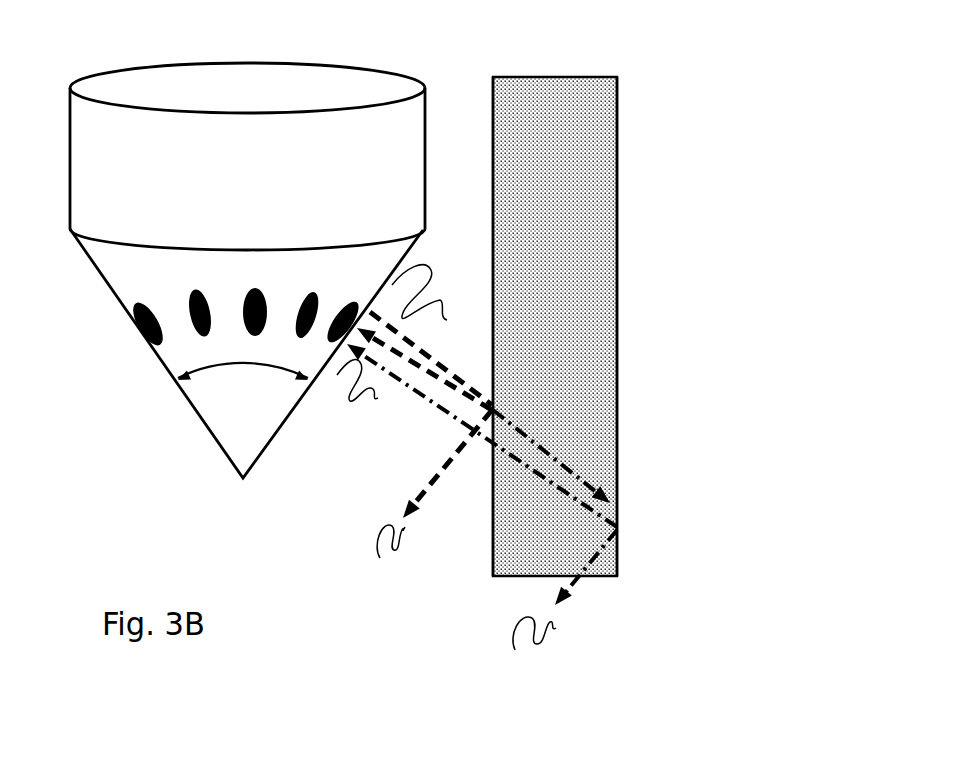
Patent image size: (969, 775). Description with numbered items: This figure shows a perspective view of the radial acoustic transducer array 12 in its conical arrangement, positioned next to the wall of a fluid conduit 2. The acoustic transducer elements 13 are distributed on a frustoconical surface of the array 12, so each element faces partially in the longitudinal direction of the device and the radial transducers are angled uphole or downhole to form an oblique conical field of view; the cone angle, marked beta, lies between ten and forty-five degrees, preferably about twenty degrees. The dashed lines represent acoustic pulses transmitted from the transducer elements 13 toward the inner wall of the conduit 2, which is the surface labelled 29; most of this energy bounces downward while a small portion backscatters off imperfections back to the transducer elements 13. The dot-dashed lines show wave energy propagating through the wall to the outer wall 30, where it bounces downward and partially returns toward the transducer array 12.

The fluid conduit 2 is at (555, 296).
The transducer array 12 is at (128, 341).
The acoustic transducer elements 13 is at (245, 309).
The first surface of sample 29 is at (502, 296).
The second surface of sample 30 is at (607, 296).